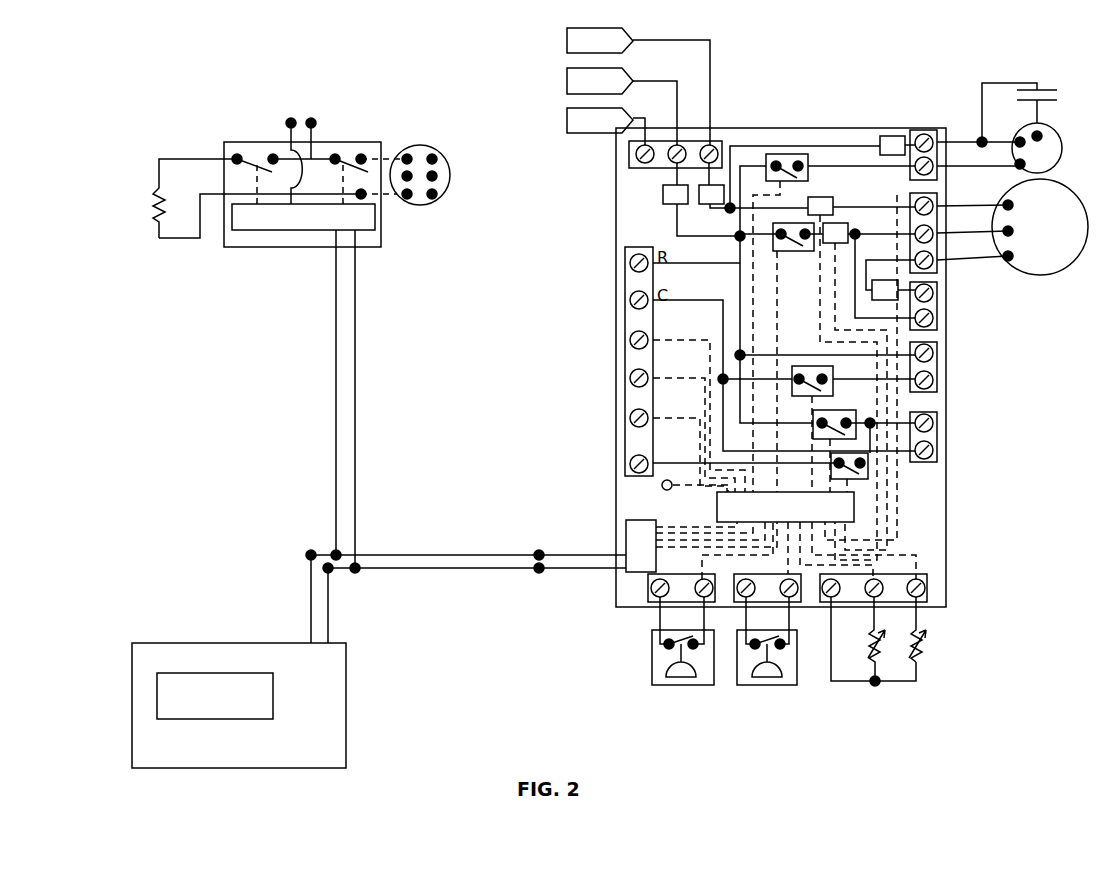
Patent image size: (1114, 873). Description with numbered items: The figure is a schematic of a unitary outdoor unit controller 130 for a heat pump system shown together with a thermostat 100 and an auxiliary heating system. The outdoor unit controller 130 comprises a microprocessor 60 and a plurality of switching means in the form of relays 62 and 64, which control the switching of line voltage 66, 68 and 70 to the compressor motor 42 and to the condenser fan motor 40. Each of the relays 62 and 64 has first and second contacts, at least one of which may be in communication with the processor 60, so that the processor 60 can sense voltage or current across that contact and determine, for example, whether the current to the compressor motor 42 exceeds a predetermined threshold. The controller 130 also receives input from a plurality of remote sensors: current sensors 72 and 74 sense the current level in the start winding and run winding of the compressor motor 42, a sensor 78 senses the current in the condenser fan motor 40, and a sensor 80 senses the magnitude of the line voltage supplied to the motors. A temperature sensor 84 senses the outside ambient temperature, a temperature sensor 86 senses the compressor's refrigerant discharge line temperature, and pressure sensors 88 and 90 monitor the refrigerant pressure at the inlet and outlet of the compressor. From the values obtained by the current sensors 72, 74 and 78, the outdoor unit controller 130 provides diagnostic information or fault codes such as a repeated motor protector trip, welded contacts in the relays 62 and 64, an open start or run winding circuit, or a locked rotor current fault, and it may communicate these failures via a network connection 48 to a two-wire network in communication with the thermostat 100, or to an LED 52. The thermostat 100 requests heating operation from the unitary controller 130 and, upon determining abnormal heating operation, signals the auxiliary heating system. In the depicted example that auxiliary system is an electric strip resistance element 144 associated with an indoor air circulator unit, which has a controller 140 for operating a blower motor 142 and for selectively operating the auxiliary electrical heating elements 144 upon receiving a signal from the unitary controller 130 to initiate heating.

The condenser fan motor 40 is at (1052, 132).
The compressor motor 42 is at (1055, 178).
The network connection 48 is at (605, 568).
The LED 52 is at (662, 487).
The microprocessor 60 is at (854, 505).
The relay 62 is at (778, 153).
The relay 64 is at (792, 223).
The line voltage 66 is at (567, 37).
The line voltage 68 is at (567, 70).
The line voltage 70 is at (567, 108).
The current sensor 72 is at (827, 196).
The current sensor 74 is at (840, 222).
The sensor 78 is at (883, 136).
The sensor 80 is at (710, 172).
The temperature sensor 84 is at (918, 665).
The temperature sensor 86 is at (876, 665).
The pressure sensor 88 is at (753, 685).
The pressure sensor 90 is at (663, 685).
The thermostat 100 is at (346, 693).
The unitary controller 130 is at (947, 582).
The controller 140 is at (275, 248).
The blower motor 142 is at (421, 145).
The electric strip resistance element 144 is at (150, 197).